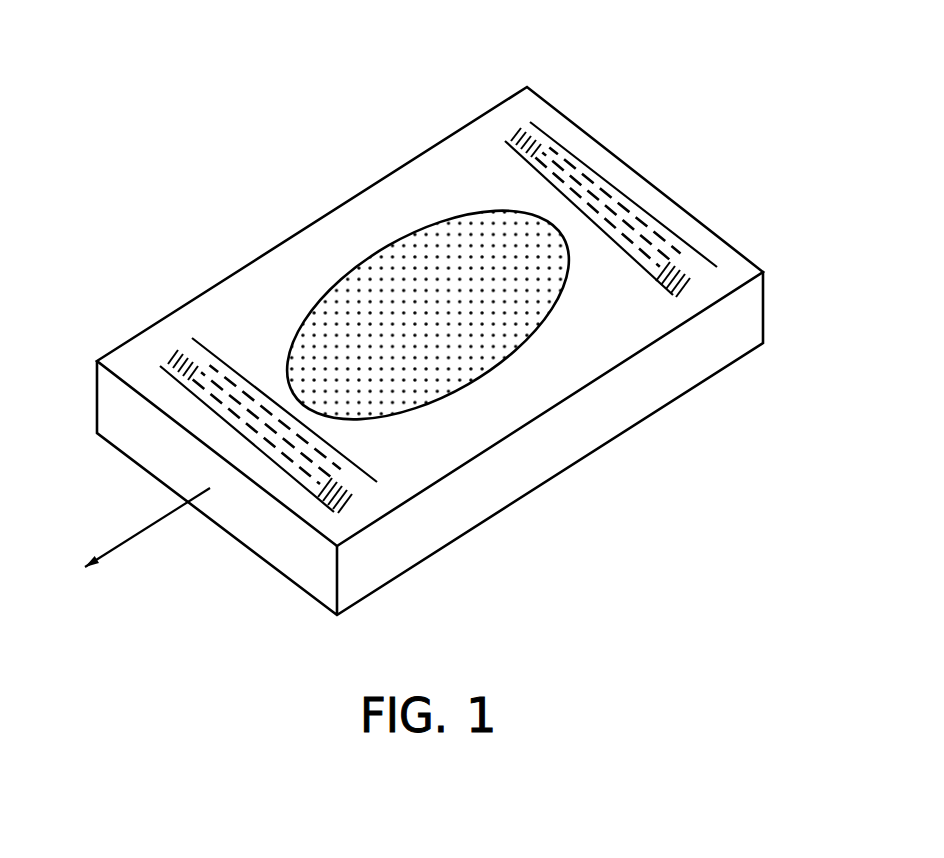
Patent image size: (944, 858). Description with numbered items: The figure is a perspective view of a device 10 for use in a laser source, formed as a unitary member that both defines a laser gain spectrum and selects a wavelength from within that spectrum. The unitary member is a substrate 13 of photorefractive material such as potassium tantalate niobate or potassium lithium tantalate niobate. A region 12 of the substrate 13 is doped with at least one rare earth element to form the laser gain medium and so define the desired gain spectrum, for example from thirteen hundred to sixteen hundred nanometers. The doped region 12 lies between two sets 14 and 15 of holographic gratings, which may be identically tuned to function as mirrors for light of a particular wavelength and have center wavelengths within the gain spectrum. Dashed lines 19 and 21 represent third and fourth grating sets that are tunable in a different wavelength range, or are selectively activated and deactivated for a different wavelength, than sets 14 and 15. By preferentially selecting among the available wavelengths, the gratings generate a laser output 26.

The device 10 is at (424, 324).
The doped region 12 is at (395, 268).
The substrate 13 is at (653, 397).
The set of holographic gratings 14 is at (556, 194).
The set of holographic gratings 15 is at (214, 411).
The third set of holographic gratings 19 is at (170, 362).
The fourth set of holographic gratings 21 is at (507, 150).
The laser output 26 is at (140, 532).